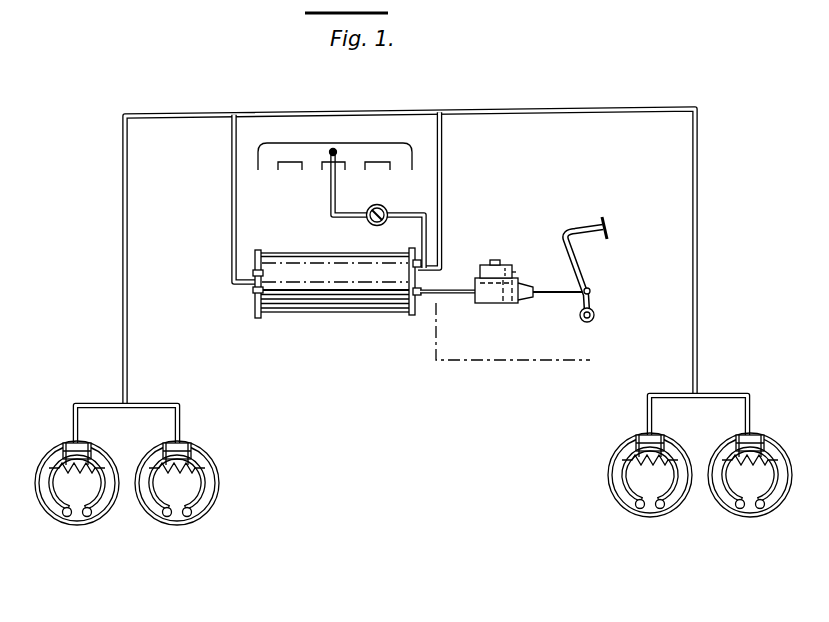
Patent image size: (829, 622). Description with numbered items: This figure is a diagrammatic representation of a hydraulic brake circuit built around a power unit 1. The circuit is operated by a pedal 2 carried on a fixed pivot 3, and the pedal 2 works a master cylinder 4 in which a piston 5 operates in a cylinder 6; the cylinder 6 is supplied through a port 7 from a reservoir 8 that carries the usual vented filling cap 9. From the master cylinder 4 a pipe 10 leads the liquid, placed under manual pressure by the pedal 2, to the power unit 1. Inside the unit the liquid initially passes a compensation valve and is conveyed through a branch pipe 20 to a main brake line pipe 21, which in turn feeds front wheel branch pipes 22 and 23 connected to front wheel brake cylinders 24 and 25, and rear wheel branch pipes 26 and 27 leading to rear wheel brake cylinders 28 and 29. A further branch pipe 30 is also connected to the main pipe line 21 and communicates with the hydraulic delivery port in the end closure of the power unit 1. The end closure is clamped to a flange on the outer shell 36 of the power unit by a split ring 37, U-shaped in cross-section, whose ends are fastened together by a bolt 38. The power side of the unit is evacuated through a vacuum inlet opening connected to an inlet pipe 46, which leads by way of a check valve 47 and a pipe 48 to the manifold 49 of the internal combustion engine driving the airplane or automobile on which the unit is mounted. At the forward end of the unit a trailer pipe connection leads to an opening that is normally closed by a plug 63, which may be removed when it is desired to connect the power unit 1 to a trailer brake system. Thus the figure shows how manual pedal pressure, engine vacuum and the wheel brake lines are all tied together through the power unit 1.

The power unit 1 is at (313, 296).
The pedal 2 is at (605, 222).
The fixed pivot 3 is at (596, 313).
The master cylinder 4 is at (481, 268).
The piston 5 is at (509, 304).
The cylinder 6 is at (483, 297).
The port 7 is at (516, 273).
The reservoir 8 is at (507, 275).
The vented filling cap 9 is at (499, 260).
The pipe 10 is at (426, 297).
The branch pipe 20 is at (443, 168).
The main brake line pipe 21 is at (163, 112).
The front wheel branch pipe 22 is at (108, 402).
The front wheel branch pipe 23 is at (150, 402).
The front wheel brake cylinder 24 is at (68, 440).
The front wheel brake cylinder 25 is at (183, 440).
The rear wheel branch pipe 26 is at (680, 393).
The rear wheel branch pipe 27 is at (722, 393).
The rear wheel brake cylinder 28 is at (645, 432).
The rear wheel brake cylinder 29 is at (755, 432).
The branch pipe 30 is at (230, 203).
The outer shell 36 is at (323, 255).
The split ring 37 is at (256, 308).
The bolt 38 is at (252, 291).
The inlet pipe 46 is at (417, 212).
The check valve 47 is at (386, 198).
The pipe 48 is at (330, 190).
The manifold 49 is at (281, 143).
The plug 63 is at (417, 316).